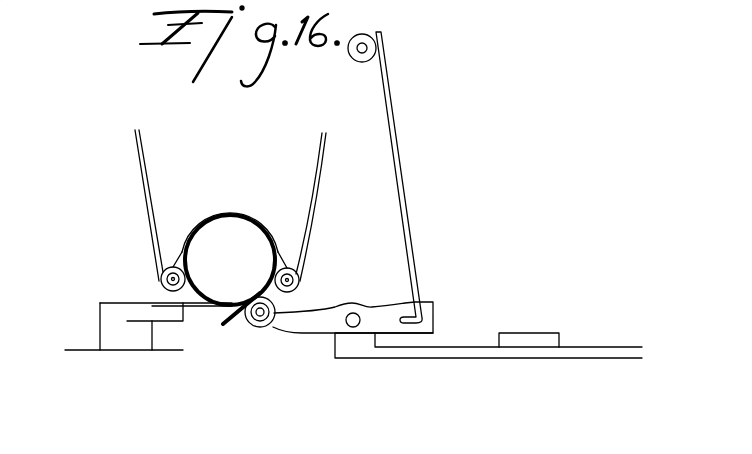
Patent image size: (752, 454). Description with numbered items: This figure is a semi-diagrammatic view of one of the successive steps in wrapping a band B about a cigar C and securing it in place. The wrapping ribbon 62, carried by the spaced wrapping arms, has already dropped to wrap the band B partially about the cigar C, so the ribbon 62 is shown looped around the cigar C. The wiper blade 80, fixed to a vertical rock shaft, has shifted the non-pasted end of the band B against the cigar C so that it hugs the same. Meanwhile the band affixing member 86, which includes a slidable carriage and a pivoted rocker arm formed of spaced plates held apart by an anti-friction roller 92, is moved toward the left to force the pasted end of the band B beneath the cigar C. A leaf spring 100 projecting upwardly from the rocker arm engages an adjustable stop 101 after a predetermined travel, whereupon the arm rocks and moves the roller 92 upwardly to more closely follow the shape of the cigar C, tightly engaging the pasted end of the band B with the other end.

The wrapping ribbon 62 is at (205, 216).
The wiper blade 80 is at (203, 307).
The band affixing member 86 is at (380, 314).
The anti-friction roller 92 is at (258, 328).
The leaf spring 100 is at (402, 172).
The adjustable stop 101 is at (363, 47).
The band B is at (240, 327).
The cigar C is at (230, 260).